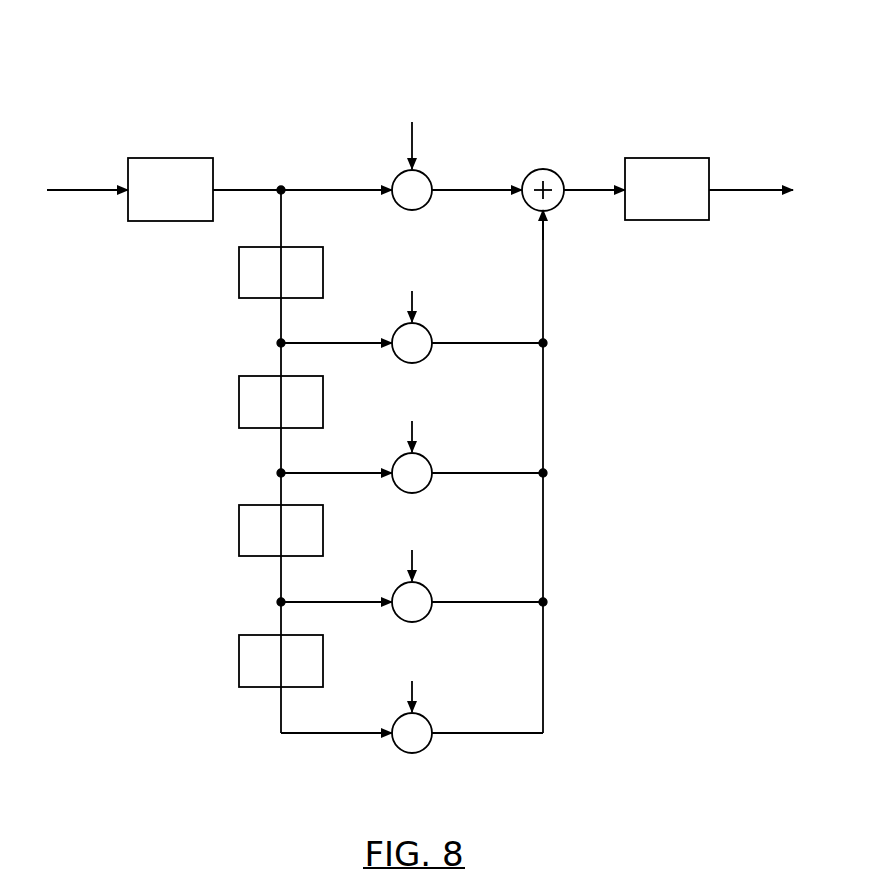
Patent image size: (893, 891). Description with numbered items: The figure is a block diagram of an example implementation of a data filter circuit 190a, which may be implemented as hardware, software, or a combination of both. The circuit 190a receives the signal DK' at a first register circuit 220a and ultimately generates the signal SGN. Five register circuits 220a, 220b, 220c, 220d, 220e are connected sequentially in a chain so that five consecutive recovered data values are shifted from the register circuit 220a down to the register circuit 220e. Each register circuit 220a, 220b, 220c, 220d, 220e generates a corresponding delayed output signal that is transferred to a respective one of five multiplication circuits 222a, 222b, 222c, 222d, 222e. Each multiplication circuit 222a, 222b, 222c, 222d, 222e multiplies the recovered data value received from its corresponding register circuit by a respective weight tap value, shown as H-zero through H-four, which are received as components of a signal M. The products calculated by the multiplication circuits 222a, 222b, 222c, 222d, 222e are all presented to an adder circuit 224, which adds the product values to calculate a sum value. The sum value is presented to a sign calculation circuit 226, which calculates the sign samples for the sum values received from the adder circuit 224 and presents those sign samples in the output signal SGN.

The circuit 190a is at (391, 38).
The register circuit 220a is at (167, 158).
The register circuit 220b is at (239, 272).
The register circuit 220c is at (239, 401).
The register circuit 220d is at (239, 531).
The register circuit 220e is at (239, 660).
The multiplication circuit 222a is at (416, 210).
The multiplication circuit 222b is at (416, 363).
The multiplication circuit 222c is at (416, 493).
The multiplication circuit 222d is at (416, 622).
The multiplication circuit 222e is at (416, 753).
The adder circuit 224 is at (549, 170).
The sign calculation circuit 226 is at (668, 157).